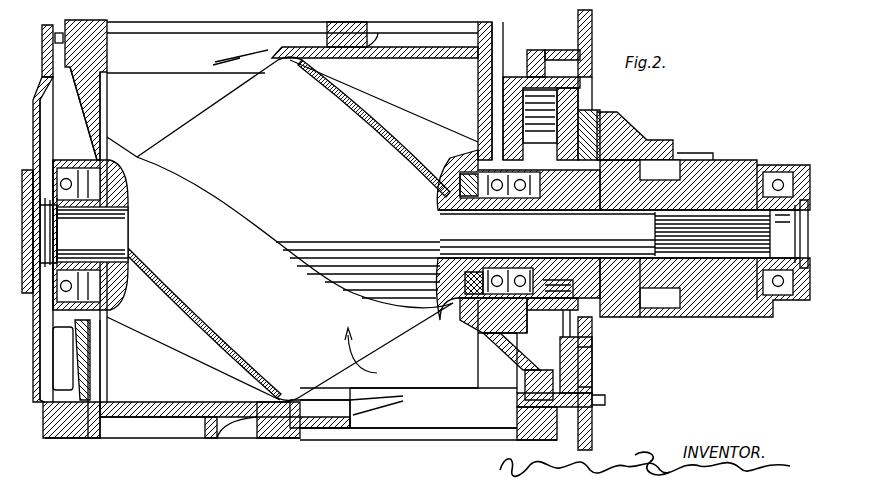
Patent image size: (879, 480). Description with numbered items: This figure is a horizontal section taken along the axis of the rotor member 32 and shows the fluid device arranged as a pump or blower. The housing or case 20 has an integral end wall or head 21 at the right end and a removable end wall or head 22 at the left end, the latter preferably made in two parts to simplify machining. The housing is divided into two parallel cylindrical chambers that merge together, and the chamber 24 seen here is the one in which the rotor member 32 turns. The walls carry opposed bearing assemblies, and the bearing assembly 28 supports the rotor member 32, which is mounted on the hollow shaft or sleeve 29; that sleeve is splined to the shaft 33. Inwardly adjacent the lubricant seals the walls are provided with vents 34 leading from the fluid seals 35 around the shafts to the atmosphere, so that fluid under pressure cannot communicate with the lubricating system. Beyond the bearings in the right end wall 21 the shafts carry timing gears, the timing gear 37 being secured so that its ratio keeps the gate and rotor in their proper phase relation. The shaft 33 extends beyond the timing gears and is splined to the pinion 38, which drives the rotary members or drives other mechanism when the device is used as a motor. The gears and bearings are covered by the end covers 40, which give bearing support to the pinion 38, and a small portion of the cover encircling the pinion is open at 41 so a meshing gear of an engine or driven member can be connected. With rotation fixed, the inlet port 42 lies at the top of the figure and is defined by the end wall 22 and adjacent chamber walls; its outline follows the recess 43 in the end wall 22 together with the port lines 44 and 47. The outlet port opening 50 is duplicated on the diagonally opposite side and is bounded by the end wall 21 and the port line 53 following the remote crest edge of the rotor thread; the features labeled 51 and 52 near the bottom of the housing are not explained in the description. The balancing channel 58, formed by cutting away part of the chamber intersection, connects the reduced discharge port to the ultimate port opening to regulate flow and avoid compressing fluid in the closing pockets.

The housing 20 is at (388, 36).
The integral end wall 21 is at (591, 24).
The removable end wall 22 is at (85, 68).
The cylindrical chamber 24 is at (150, 140).
The bearing assembly 28 is at (550, 160).
The hollow shaft 29 is at (110, 197).
The rotor member 32 is at (288, 229).
The shaft 33 is at (107, 232).
The vent 34 is at (497, 78).
The fluid seal 35 is at (463, 200).
The timing gear 37 is at (600, 345).
The pinion 38 is at (717, 159).
The end cover 40 is at (42, 38).
The opening 41 is at (673, 155).
The inlet port 42 is at (182, 58).
The recess 43 is at (90, 103).
The port line 44 is at (233, 65).
The port line 47 is at (147, 63).
The outlet port opening 50 is at (472, 415).
The gap 51 is at (492, 353).
The recess 52 is at (438, 398).
The port line 53 is at (384, 400).
The balancing channel 58 is at (317, 414).